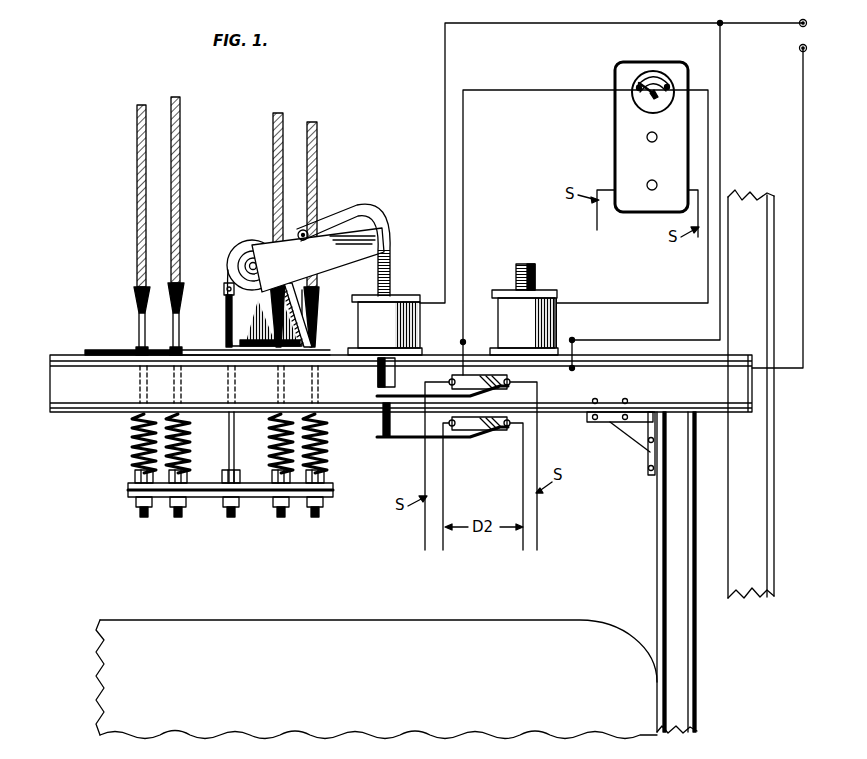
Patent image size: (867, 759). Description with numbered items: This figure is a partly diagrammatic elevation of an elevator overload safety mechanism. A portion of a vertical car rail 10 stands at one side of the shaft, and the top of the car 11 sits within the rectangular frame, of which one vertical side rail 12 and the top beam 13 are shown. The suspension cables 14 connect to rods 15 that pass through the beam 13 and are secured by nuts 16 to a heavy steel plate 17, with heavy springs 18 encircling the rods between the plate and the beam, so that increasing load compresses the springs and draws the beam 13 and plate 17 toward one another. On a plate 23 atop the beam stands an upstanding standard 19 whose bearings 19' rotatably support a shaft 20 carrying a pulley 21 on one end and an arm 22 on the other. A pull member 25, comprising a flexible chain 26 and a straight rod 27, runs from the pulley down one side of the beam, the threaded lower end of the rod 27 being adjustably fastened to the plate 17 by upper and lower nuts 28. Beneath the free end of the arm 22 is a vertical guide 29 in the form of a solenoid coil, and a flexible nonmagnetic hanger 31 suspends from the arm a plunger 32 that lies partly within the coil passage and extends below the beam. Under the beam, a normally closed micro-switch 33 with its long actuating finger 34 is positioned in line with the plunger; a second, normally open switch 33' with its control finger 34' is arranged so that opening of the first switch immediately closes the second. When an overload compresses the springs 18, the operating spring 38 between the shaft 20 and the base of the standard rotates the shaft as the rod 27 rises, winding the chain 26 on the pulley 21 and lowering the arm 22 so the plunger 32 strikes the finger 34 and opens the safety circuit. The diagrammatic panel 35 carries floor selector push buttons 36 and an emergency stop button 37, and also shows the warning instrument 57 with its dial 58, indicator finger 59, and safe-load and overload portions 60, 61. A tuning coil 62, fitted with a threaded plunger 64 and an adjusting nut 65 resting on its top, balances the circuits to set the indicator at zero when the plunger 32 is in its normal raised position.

The vertical car rail 10 is at (778, 505).
The top of the car 11 is at (365, 620).
The vertical side rail 12 is at (668, 583).
The top beam 13 is at (92, 400).
The suspension cables 14 is at (313, 124).
The rods 15 is at (172, 321).
The nuts 16 is at (133, 503).
The heavy steel plate 17 is at (302, 498).
The springs 18 is at (166, 447).
The standard 19 is at (299, 383).
The bearings 19' is at (249, 308).
The shaft 20 is at (253, 258).
The pulley 21 is at (228, 262).
The arm 22 is at (332, 258).
The plate 23 is at (97, 352).
The pull member 25 is at (223, 317).
The chain 26 is at (225, 290).
The rod 27 is at (229, 444).
The nuts 28 is at (218, 498).
The vertical guide 29 is at (385, 300).
The flexible hanger 31 is at (390, 263).
The plunger 32 is at (378, 371).
The switch 33 is at (479, 356).
The second switch 33' is at (479, 437).
The switch blade actuating finger 34 is at (442, 383).
The control finger 34' is at (442, 444).
The panel 35 is at (622, 76).
The push buttons 36 is at (646, 137).
The button 37 is at (645, 183).
The operating spring 38 is at (313, 312).
The instrument 57 is at (665, 68).
The dial 58 is at (636, 96).
The indicator finger 59 is at (641, 93).
The panel 60 is at (642, 72).
The panel 61 is at (670, 80).
The tuning coil 62 is at (557, 326).
The plunger 64 is at (536, 270).
The adjusting nut 65 is at (557, 293).